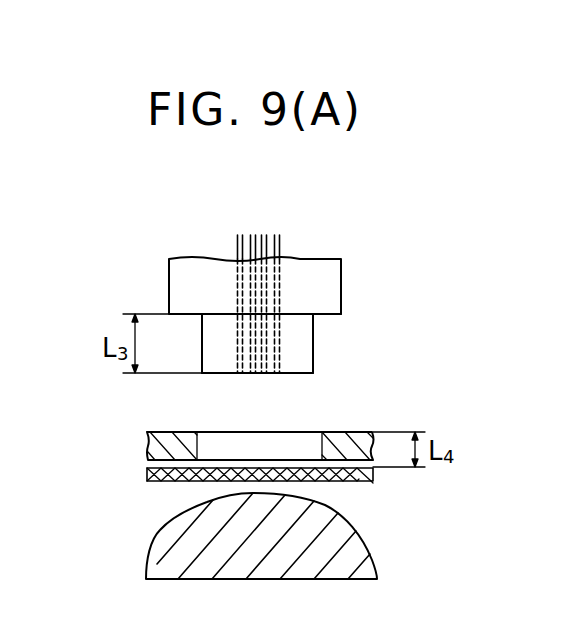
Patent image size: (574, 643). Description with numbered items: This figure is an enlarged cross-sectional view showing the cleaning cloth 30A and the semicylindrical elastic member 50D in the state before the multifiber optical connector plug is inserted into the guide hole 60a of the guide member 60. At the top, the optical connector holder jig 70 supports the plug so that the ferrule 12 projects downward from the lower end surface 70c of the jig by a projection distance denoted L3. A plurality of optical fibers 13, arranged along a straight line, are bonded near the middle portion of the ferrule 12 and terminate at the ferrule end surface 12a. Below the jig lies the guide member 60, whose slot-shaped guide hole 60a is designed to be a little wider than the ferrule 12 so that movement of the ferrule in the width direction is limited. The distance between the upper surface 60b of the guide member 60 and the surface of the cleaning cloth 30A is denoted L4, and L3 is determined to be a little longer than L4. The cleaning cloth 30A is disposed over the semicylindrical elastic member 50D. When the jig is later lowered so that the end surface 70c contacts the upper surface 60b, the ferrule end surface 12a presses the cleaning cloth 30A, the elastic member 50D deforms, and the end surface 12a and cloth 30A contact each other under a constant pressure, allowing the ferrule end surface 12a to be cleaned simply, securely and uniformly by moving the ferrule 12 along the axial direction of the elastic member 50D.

The optical connector holder jig 70 is at (325, 278).
The lower end surface of the opening 70c is at (313, 317).
The ferrule 12 is at (297, 353).
The ferrule end surface 12a is at (300, 373).
The optical fibers 13 is at (238, 376).
The guide member 60 is at (155, 447).
The upper surface of the guide member 60b is at (190, 431).
The guide hole 60a is at (307, 448).
The cleaning cloth 30A is at (147, 471).
The semicylindrical elastic member 50D is at (158, 545).